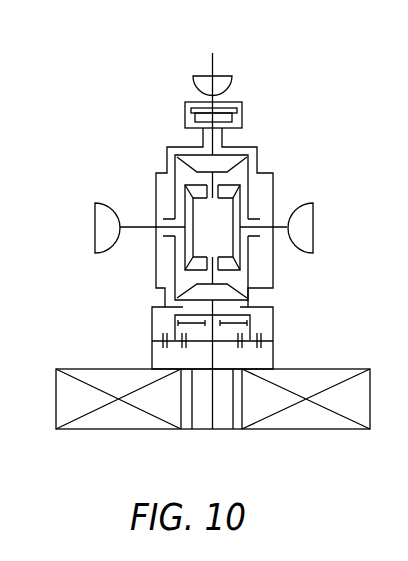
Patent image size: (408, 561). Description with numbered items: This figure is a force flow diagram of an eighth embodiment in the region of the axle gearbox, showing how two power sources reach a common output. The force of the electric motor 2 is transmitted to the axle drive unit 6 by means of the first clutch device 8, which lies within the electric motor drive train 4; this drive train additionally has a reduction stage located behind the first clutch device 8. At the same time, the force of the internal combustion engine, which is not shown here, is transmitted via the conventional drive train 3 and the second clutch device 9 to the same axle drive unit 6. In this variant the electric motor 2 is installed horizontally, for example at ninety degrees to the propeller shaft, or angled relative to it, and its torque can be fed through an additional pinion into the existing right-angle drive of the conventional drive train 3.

The electric motor 2 is at (118, 417).
The conventional drive train 3 is at (210, 65).
The electric motor drive train 4 is at (113, 335).
The axle drive unit 6 is at (218, 236).
The first clutch device 8 is at (250, 316).
The second clutch device 9 is at (196, 111).